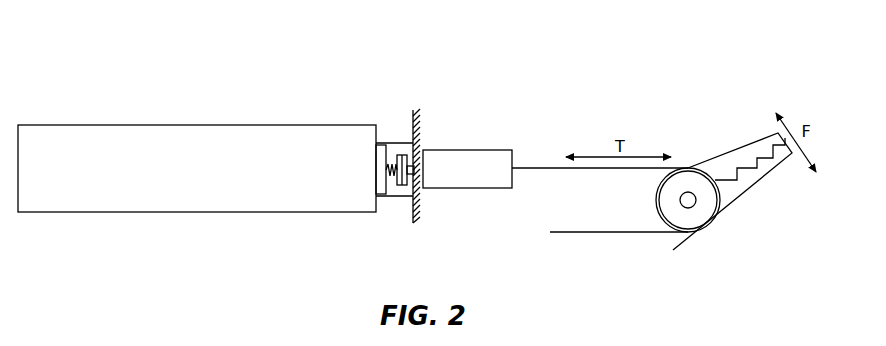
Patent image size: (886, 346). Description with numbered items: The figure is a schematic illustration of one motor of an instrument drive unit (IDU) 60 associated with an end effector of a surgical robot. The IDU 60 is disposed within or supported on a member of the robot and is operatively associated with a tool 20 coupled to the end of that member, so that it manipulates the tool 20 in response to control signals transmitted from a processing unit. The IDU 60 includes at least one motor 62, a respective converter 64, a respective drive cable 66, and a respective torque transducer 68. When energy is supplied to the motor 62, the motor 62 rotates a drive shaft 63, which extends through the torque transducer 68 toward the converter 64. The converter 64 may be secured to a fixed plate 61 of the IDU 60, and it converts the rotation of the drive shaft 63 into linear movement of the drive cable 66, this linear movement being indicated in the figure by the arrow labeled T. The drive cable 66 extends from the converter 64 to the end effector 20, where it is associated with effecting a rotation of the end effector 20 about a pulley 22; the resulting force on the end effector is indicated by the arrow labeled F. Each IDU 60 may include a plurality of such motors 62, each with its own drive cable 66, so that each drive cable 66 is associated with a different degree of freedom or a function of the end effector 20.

The tool 20 is at (734, 224).
The pulley 22 is at (697, 215).
The instrument drive unit 60 is at (421, 81).
The fixed plate 61 is at (418, 127).
The motor 62 is at (220, 199).
The drive shaft 63 is at (415, 167).
The converter 64 is at (475, 191).
The drive cable 66 is at (546, 156).
The torque transducer 68 is at (400, 199).